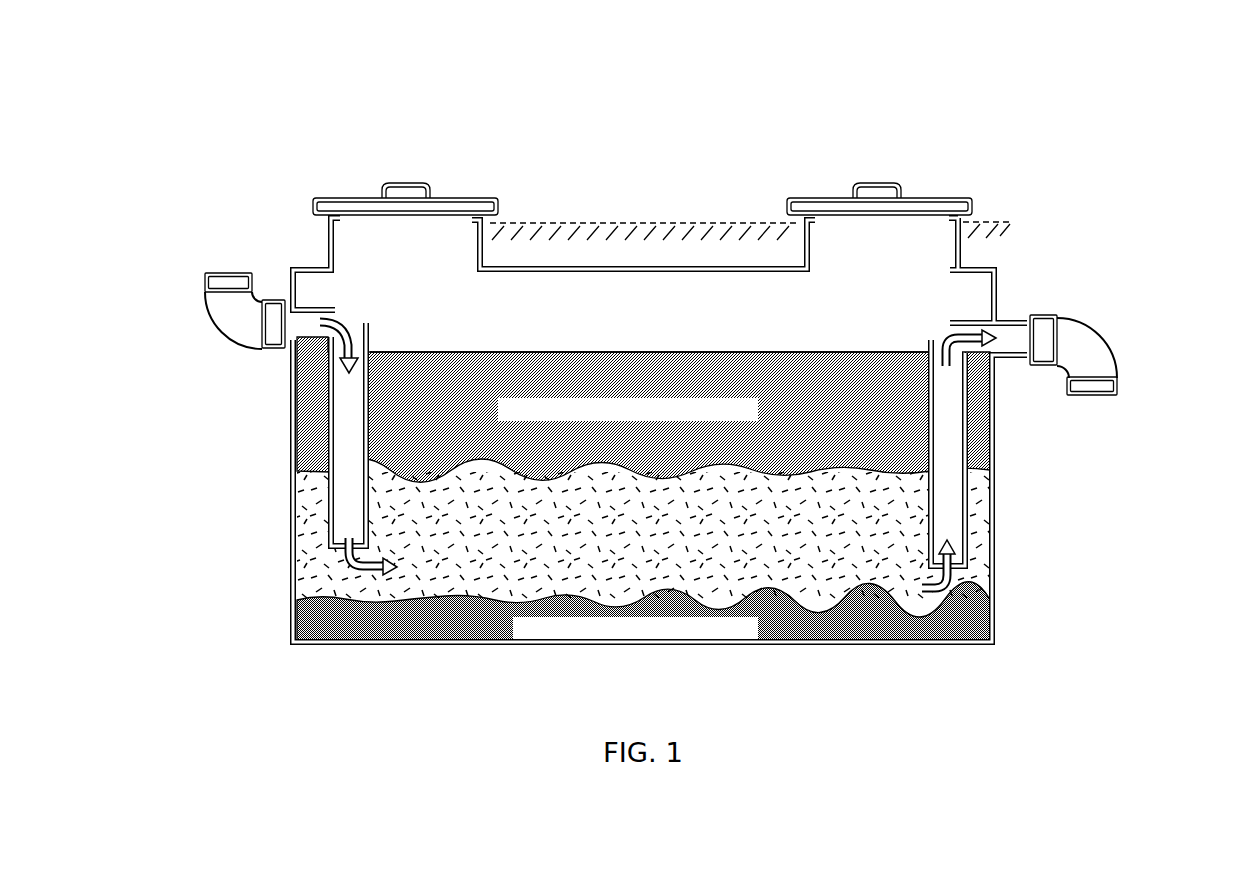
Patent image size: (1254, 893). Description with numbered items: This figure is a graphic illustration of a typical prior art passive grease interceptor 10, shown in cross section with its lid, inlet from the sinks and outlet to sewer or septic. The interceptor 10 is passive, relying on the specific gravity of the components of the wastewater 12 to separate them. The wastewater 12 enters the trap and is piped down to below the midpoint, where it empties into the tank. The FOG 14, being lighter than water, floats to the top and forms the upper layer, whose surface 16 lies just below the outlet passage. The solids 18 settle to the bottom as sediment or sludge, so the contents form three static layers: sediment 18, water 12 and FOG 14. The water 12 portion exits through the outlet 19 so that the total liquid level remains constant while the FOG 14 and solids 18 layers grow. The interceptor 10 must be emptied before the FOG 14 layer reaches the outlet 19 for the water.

The passive grease interceptor 10 is at (963, 82).
The wastewater 12 is at (774, 552).
The FOG 14 is at (755, 419).
The surface of fats, oils, and grease layer 16 is at (827, 352).
The solids 18 is at (754, 637).
The outlet 19 is at (1180, 437).